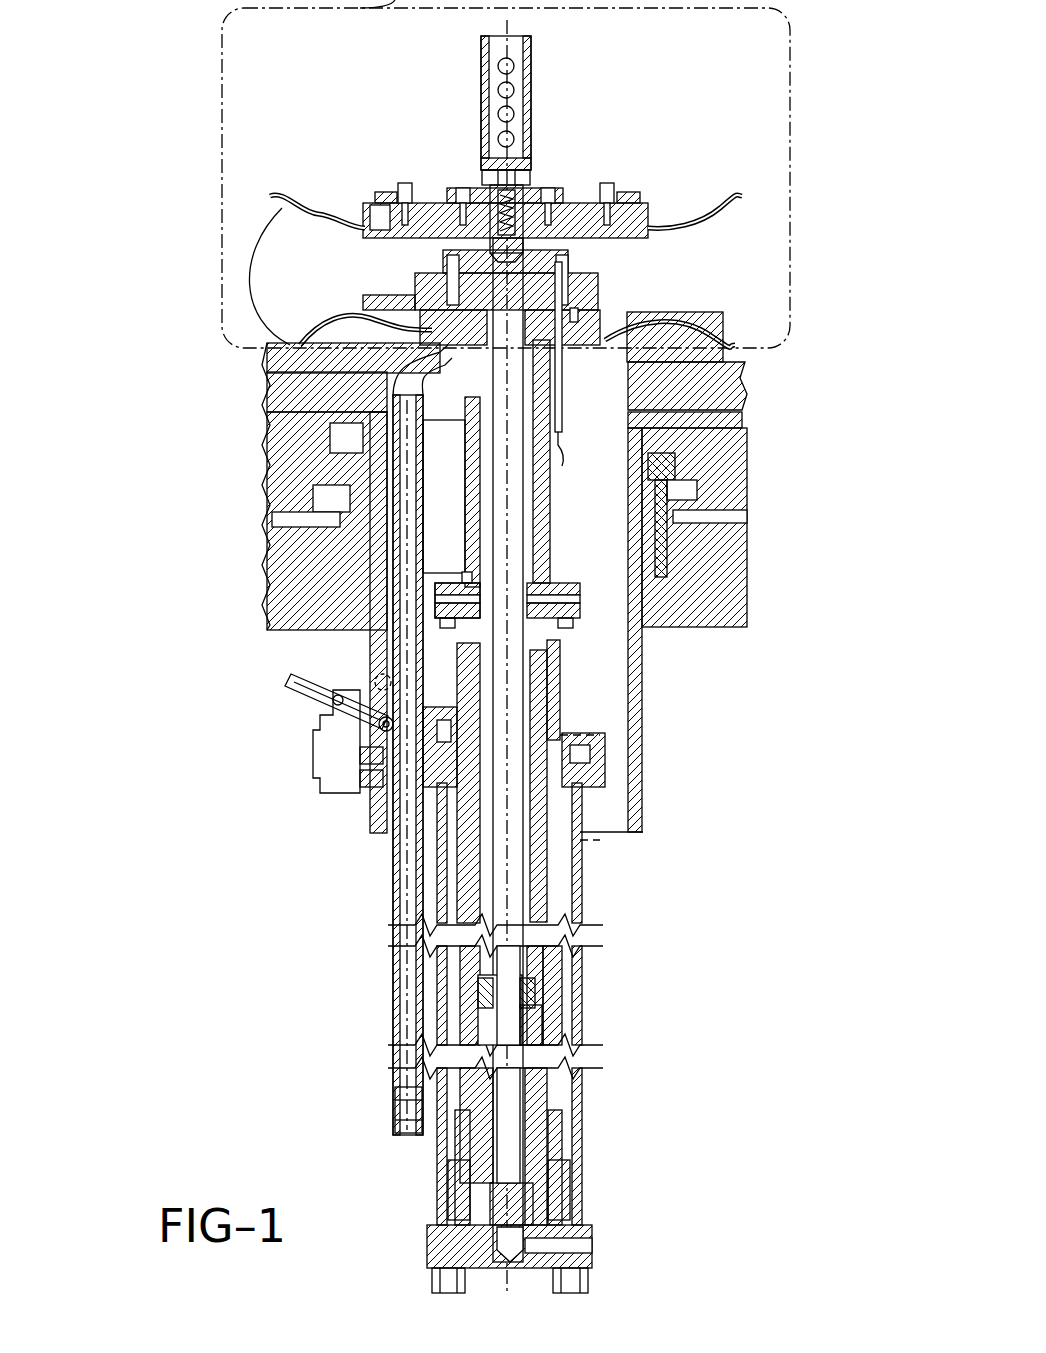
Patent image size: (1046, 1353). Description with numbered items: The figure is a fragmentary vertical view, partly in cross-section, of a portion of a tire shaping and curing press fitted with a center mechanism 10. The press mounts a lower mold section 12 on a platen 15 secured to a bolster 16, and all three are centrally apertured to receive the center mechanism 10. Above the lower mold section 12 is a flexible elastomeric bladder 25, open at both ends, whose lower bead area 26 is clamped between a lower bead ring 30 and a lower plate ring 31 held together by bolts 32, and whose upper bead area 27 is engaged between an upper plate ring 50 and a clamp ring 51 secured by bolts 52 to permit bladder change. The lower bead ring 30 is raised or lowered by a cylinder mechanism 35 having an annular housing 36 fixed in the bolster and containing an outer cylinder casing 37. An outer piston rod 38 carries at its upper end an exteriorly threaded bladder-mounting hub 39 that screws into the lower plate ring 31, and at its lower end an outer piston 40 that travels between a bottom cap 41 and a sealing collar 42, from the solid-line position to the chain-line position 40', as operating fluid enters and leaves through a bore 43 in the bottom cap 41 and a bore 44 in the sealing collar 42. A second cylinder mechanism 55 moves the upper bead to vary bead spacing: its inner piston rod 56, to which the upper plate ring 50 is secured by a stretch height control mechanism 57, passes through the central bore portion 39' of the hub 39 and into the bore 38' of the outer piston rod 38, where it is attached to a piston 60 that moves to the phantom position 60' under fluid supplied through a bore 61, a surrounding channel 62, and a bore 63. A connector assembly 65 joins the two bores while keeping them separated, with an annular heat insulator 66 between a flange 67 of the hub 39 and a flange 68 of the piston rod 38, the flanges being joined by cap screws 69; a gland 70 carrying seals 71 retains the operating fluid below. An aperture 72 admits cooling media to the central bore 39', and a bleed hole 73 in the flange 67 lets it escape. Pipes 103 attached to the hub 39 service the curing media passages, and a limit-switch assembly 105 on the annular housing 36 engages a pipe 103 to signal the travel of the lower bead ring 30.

The center mechanism 10 is at (648, 78).
The lower mold section 12 is at (708, 346).
The platen 15 is at (290, 372).
The bolster 16 is at (290, 468).
The bladder 25 is at (266, 276).
The lower bead area 26 is at (635, 340).
The upper bead area 27 is at (372, 212).
The lower bead ring 30 is at (640, 362).
The lower plate ring 31 is at (582, 288).
The bolts 32 is at (640, 385).
The cylinder mechanism 35 is at (396, 996).
The annular housing 36 is at (640, 670).
The outer cylinder casing 37 is at (578, 968).
The outer piston rod 38 is at (426, 995).
The bore 38' is at (600, 1025).
The bladder-mounting hub 39 is at (713, 282).
The central bore portion 39' is at (552, 750).
The outer piston 40 is at (546, 1190).
The chain line position 40' is at (647, 856).
The bottom cap 41 is at (452, 1255).
The sealing collar 42 is at (575, 742).
The bore 43 is at (568, 1250).
The bore 44 is at (565, 772).
The upper plate ring 50 is at (392, 237).
The clamp ring 51 is at (383, 205).
The bolts 52 is at (410, 190).
The cylinder mechanism 55 is at (466, 490).
The inner piston rod 56 is at (500, 450).
The stretch height control mechanism 57 is at (480, 76).
The piston 60 is at (561, 993).
The phantom line position 60' is at (650, 740).
The bore 61 is at (548, 680).
The channel 62 is at (537, 855).
The bore 63 is at (547, 642).
The connector assembly 65 is at (432, 582).
The annular heat insulator 66 is at (440, 600).
The flange 67 is at (440, 590).
The flange 68 is at (440, 612).
The cap screws 69 is at (450, 622).
The gland 70 is at (565, 562).
The seals 71 is at (555, 600).
The aperture 72 is at (548, 455).
The bleed hole 73 is at (472, 588).
The pipes 103 is at (398, 470).
The limit-switch assembly 105 is at (380, 729).